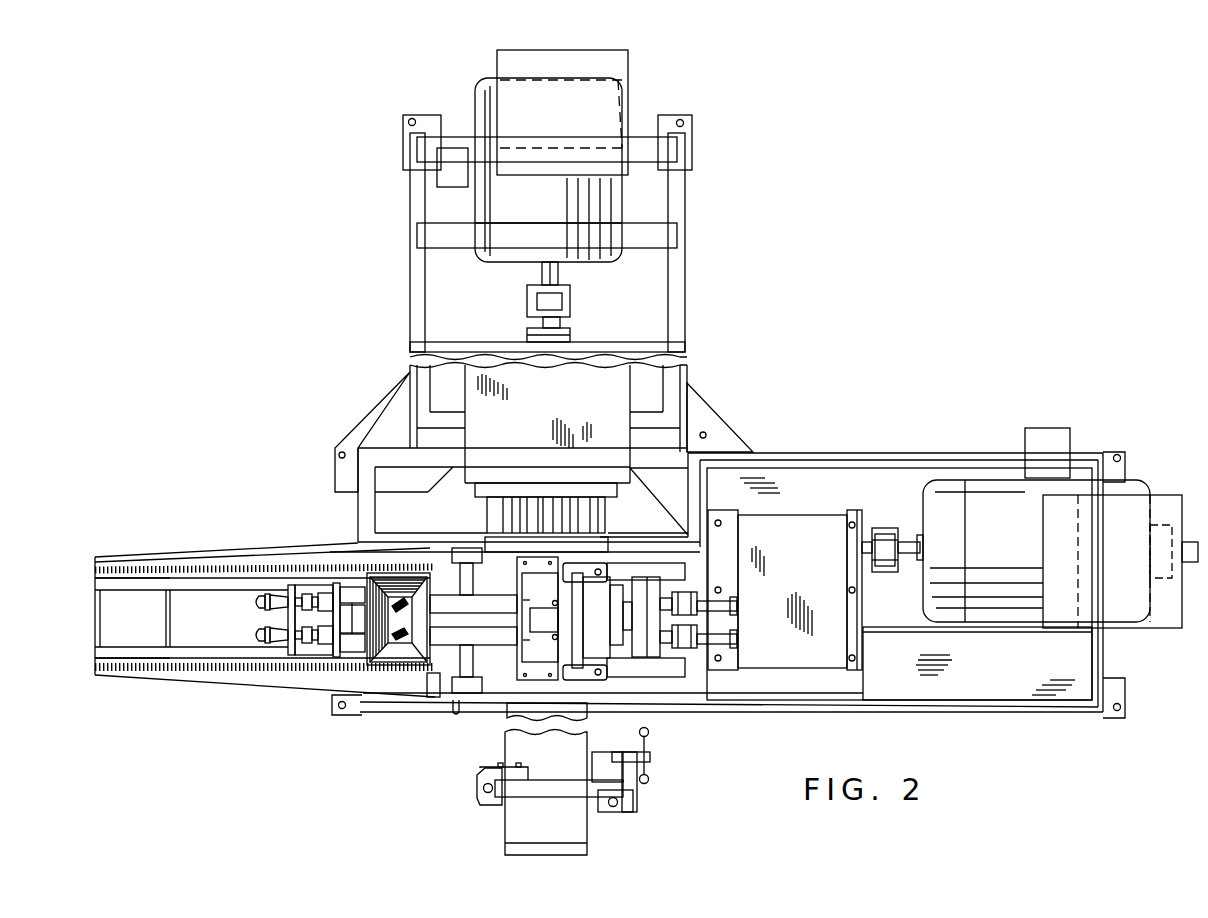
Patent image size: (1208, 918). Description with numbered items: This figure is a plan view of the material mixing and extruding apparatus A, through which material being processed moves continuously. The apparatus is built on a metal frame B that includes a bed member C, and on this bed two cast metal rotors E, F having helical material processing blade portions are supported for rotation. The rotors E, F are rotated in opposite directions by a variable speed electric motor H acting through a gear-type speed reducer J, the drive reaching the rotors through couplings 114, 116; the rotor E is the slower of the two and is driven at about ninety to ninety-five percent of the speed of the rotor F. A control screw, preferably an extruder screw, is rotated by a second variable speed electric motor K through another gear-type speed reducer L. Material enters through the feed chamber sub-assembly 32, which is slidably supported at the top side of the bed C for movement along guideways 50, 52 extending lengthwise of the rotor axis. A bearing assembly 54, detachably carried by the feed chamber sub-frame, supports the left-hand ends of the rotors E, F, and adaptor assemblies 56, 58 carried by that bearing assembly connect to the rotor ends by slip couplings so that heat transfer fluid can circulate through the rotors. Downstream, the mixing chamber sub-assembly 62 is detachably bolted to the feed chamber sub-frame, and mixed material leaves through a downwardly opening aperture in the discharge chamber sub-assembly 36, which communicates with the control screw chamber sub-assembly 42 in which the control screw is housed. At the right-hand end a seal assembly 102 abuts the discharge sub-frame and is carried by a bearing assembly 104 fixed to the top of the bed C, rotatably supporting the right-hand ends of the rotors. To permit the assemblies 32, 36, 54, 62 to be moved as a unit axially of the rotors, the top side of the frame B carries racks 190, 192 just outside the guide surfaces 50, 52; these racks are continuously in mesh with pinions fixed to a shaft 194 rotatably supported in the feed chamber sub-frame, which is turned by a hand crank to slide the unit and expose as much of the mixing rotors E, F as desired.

The rack 192 is at (202, 562).
The rack 190 is at (207, 668).
The guideway 52 is at (113, 590).
The guideway 50 is at (152, 657).
The adaptor assembly 58 is at (253, 603).
The adaptor assembly 56 is at (253, 636).
The feed chamber sub-assembly 32 is at (365, 617).
The bearing assembly 54 is at (355, 647).
The shaft 194 is at (418, 680).
The bed member C is at (263, 688).
The rotor F is at (393, 598).
The rotor E is at (393, 637).
The mixing chamber sub-assembly 62 is at (492, 608).
The discharge chamber sub-assembly 36 is at (538, 652).
The control screw chamber sub-assembly 42 is at (505, 750).
The seal assembly 102 is at (610, 592).
The bearing assembly 104 is at (638, 648).
The coupling 116 is at (688, 592).
The coupling 114 is at (688, 650).
The gear-type speed reducer J is at (826, 500).
The variable speed electric motor H is at (983, 496).
The metal frame B is at (866, 688).
The material mixing and extruding apparatus A is at (722, 412).
The gear-type speed reducer L is at (445, 375).
The variable speed electric motor K is at (598, 265).